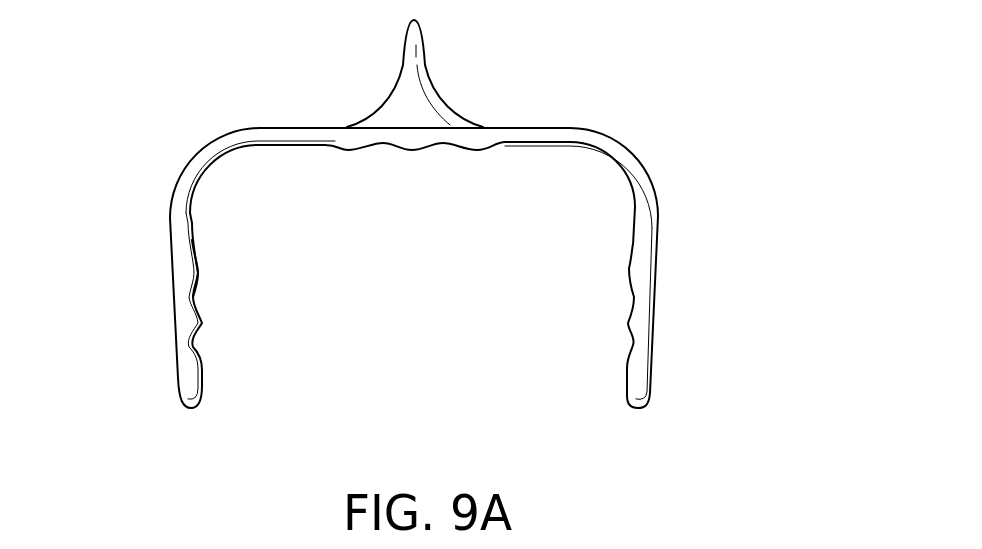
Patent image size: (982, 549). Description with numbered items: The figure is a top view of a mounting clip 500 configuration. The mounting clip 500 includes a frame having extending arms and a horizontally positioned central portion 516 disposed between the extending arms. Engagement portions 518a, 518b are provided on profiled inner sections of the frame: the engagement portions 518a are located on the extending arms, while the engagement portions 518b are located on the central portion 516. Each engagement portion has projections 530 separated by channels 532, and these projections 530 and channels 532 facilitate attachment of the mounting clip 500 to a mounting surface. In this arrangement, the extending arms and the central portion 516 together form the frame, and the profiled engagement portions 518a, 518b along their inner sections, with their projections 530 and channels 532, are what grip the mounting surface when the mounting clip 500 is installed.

The mounting clip 500 is at (420, 214).
The central portion 516 is at (547, 127).
The engagement portions 518a is at (202, 327).
The engagement portions 518b is at (410, 150).
The projections 530 is at (198, 273).
The channels 532 is at (193, 297).